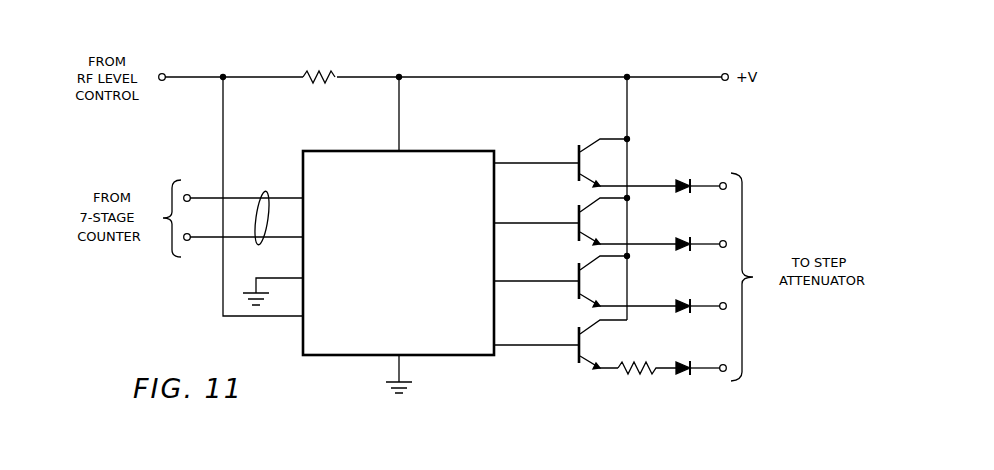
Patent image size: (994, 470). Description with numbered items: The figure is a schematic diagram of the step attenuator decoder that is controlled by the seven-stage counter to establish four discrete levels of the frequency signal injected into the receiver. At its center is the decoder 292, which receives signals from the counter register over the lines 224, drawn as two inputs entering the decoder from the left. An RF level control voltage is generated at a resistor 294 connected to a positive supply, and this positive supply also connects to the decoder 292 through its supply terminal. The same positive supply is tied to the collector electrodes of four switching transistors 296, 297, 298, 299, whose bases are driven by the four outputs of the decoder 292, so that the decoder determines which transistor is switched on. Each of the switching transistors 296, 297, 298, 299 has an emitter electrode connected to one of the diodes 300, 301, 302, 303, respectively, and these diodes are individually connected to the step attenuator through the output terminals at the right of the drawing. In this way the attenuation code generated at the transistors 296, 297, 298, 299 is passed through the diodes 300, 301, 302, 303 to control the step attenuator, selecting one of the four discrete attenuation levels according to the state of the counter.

The lines 224 is at (260, 191).
The decoder 292 is at (419, 259).
The resistor 294 is at (318, 72).
The switching transistor 296 is at (577, 157).
The switching transistor 297 is at (577, 217).
The switching transistor 298 is at (577, 274).
The switching transistor 299 is at (577, 337).
The diode 300 is at (685, 178).
The diode 301 is at (686, 237).
The diode 302 is at (686, 300).
The diode 303 is at (686, 362).